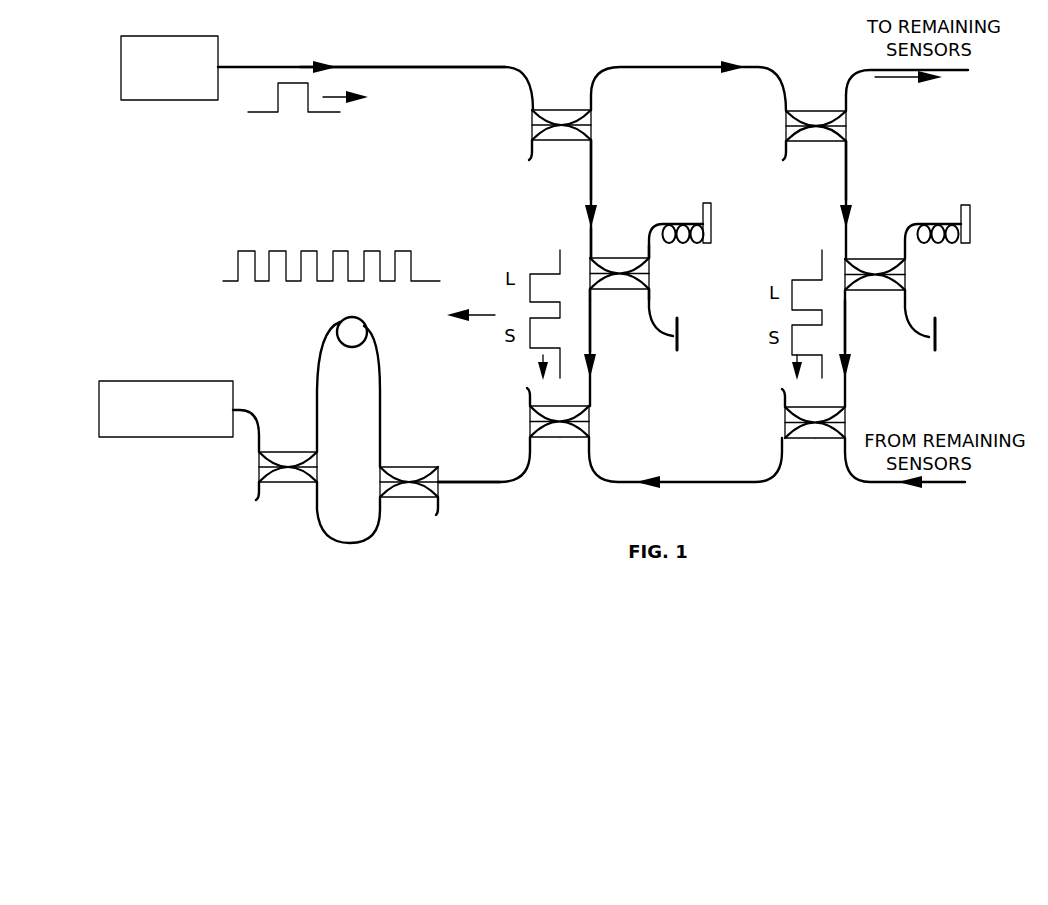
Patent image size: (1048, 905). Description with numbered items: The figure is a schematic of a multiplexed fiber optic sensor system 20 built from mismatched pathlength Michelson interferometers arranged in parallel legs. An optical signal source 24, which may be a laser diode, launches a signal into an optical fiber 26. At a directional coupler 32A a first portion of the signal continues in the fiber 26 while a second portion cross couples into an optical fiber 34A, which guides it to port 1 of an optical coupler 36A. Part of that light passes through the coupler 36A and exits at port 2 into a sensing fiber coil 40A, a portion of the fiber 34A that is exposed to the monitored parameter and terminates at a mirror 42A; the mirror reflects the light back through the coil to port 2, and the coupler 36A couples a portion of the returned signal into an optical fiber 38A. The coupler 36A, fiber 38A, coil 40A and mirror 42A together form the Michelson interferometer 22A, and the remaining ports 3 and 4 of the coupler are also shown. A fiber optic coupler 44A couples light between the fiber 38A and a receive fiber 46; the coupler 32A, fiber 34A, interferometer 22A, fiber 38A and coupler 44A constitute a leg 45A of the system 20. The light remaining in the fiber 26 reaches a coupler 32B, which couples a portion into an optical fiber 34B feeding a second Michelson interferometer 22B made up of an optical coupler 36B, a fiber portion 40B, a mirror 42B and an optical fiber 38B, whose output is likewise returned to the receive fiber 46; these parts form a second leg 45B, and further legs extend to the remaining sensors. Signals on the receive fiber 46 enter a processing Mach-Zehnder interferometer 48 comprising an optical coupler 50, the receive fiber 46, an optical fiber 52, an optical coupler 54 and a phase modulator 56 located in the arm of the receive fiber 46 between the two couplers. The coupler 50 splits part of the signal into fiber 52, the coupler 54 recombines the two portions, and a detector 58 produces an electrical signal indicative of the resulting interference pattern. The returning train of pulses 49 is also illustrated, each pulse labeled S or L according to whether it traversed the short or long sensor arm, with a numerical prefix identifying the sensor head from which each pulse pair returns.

The fiber optic sensor system 20 is at (190, 222).
The optical signal source 24 is at (150, 101).
The optical fiber 26 is at (374, 66).
The returning train of pulses 49 is at (336, 236).
The directional coupler 32A is at (561, 85).
The optical fiber 34A is at (585, 157).
The optical coupler 36A is at (619, 236).
The port 1 is at (589, 250).
The port 2 is at (652, 247).
The port 3 is at (598, 296).
The port 4 is at (655, 312).
The sensing fiber coil 40A is at (685, 192).
The mirror 42A is at (712, 212).
The Michelson interferometer 22A is at (710, 337).
The optical fiber 38A is at (591, 326).
The fiber optic coupler 44A is at (592, 428).
The leg 45A is at (560, 462).
The coupler 32B is at (819, 85).
The optical fiber 34B is at (843, 200).
The optical coupler 36B is at (874, 236).
The fiber portion 40B is at (936, 192).
The mirror 42B is at (972, 210).
The Michelson interferometer 22B is at (985, 292).
The optical fiber 38B is at (847, 306).
The leg 45B is at (815, 462).
The receive fiber 46 is at (487, 485).
The optical coupler 50 is at (423, 439).
The processing Mach-Zehnder interferometer 48 is at (405, 406).
The optical fiber 52 is at (315, 500).
The phase modulator 56 is at (335, 326).
The optical coupler 54 is at (288, 430).
The detector 58 is at (123, 380).